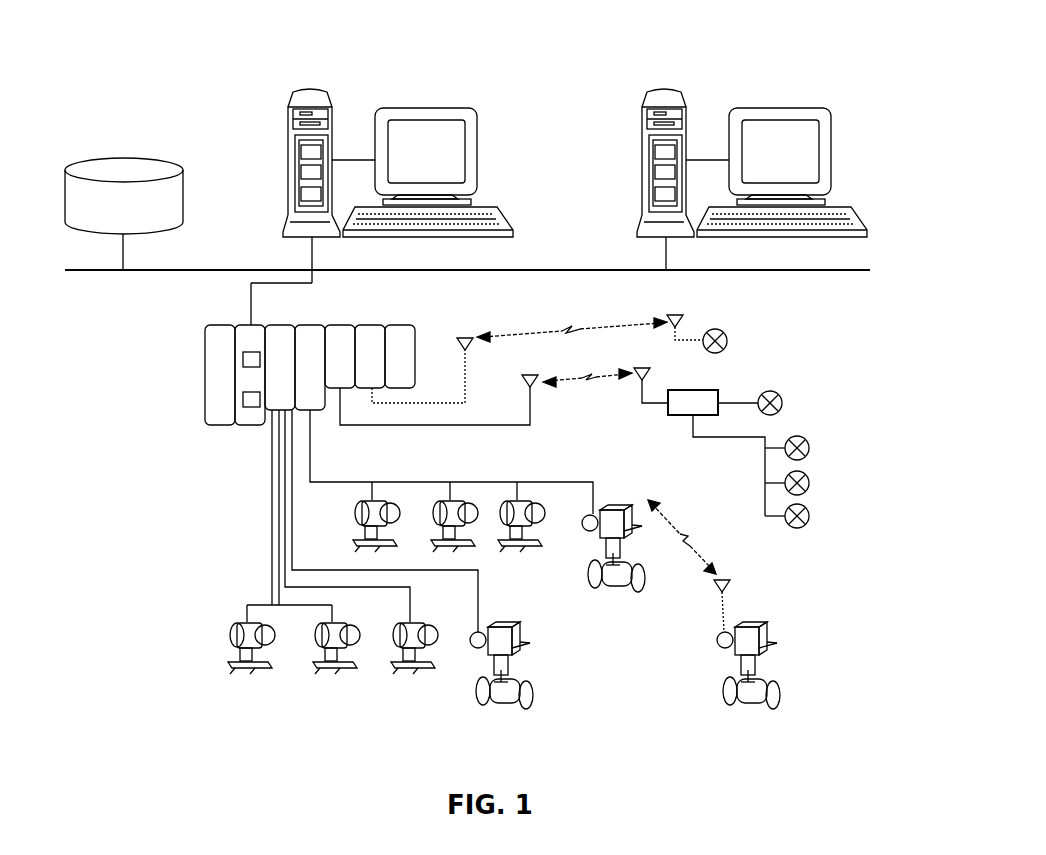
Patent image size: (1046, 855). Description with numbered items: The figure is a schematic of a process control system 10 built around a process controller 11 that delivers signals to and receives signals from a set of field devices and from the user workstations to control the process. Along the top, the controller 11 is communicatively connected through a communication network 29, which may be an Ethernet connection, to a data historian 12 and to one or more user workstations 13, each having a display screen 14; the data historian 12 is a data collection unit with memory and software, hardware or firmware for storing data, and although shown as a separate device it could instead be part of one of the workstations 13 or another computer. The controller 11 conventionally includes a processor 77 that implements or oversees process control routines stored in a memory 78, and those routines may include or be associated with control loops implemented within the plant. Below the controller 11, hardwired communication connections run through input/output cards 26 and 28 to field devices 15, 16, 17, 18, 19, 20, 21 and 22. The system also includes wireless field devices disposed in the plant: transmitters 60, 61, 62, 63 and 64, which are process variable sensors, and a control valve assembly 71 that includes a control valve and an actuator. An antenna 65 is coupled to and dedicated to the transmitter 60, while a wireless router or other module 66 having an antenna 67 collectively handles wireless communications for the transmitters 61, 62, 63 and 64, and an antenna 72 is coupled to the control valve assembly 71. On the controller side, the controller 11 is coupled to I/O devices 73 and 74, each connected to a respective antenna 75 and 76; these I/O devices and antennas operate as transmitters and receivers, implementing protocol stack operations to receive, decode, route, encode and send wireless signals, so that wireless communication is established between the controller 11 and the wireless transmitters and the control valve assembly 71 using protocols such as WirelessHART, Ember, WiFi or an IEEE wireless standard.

The process control system 10 is at (599, 52).
The process controller 11 is at (215, 359).
The data historian 12 is at (184, 193).
The user workstation 13 is at (288, 123).
The display screen 14 is at (477, 145).
The field device 15 is at (243, 668).
The field device 16 is at (328, 668).
The field device 17 is at (406, 668).
The field device 18 is at (490, 656).
The field device 19 is at (377, 500).
The field device 20 is at (455, 500).
The field device 21 is at (522, 500).
The field device 22 is at (614, 508).
The input/output card 26 is at (281, 340).
The input/output card 28 is at (308, 338).
The communication network 29 is at (183, 273).
The wireless field device 60 is at (728, 340).
The wireless field device 61 is at (784, 400).
The wireless field device 62 is at (811, 447).
The wireless field device 63 is at (811, 482).
The wireless field device 64 is at (811, 516).
The antenna 65 is at (684, 318).
The wireless router module 66 is at (681, 418).
The antenna 67 is at (650, 386).
The control valve assembly 71 is at (733, 655).
The antenna 72 is at (732, 589).
The I/O device 73 is at (342, 338).
The I/O device 74 is at (372, 338).
The antenna 75 is at (530, 407).
The antenna 76 is at (470, 360).
The processor 77 is at (243, 359).
The memory 78 is at (243, 399).